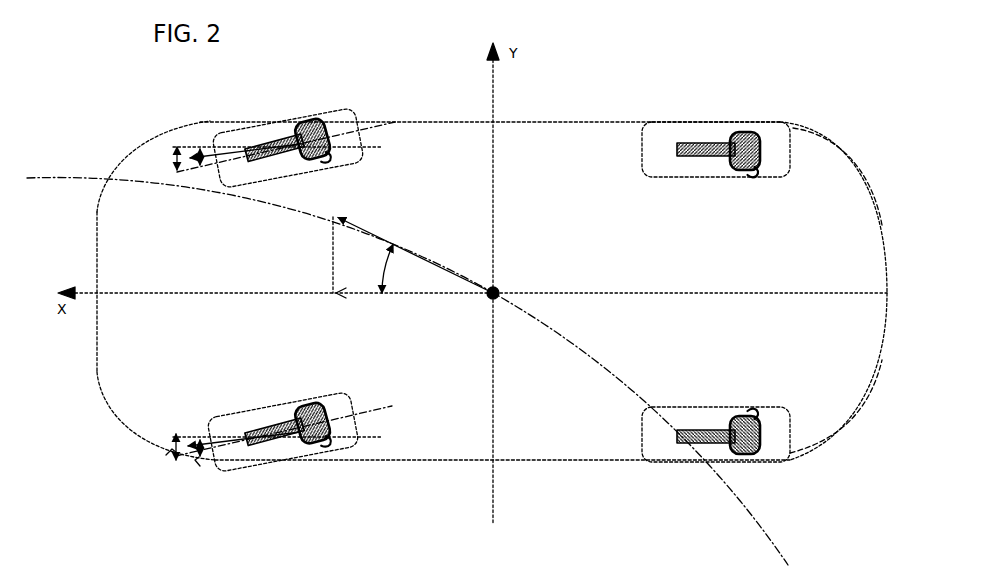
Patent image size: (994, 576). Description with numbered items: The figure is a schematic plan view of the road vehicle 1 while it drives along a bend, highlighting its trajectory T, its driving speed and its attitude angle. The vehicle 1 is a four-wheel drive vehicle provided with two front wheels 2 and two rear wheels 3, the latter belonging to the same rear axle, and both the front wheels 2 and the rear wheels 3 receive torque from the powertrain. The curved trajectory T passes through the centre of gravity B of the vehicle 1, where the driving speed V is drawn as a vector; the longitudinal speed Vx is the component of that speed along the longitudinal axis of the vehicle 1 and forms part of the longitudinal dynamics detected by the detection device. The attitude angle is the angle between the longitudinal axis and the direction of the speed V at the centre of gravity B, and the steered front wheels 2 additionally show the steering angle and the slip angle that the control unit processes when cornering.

The road vehicle 1 is at (402, 74).
The front wheels 2 is at (275, 300).
The rear wheels 3 is at (778, 134).
The trajectory T is at (61, 176).
The speed V is at (386, 213).
The longitudinal speed Vx is at (403, 297).
The centre of gravity B is at (504, 279).